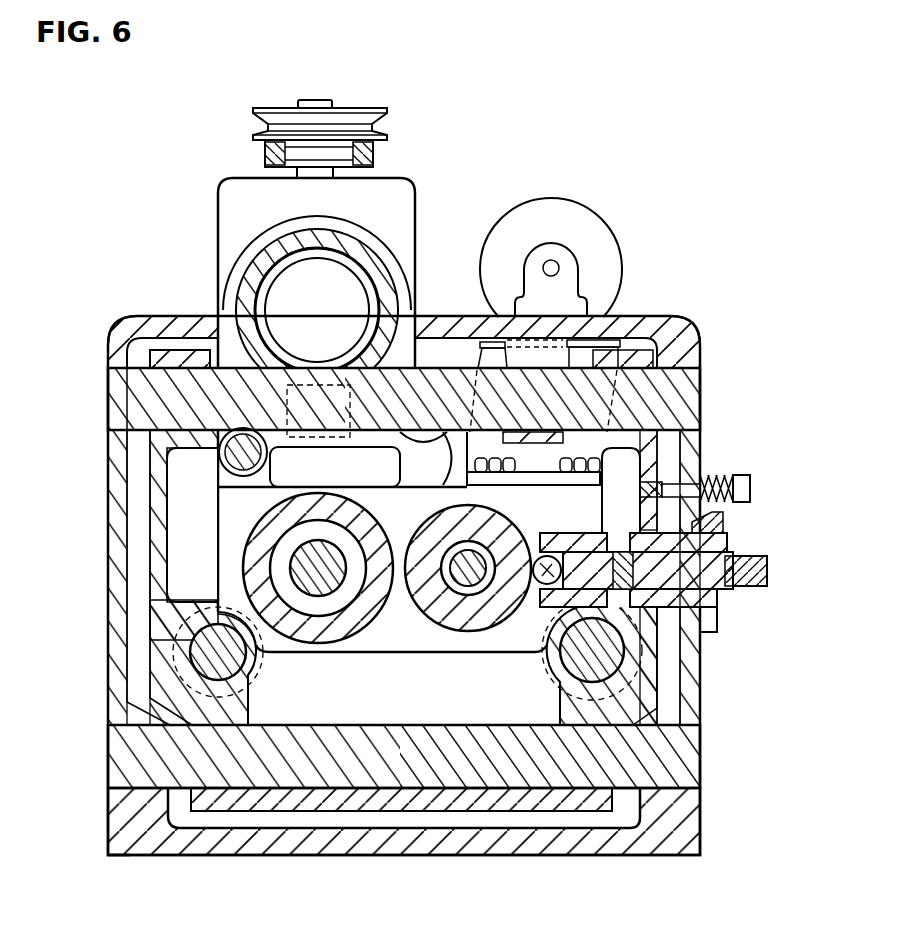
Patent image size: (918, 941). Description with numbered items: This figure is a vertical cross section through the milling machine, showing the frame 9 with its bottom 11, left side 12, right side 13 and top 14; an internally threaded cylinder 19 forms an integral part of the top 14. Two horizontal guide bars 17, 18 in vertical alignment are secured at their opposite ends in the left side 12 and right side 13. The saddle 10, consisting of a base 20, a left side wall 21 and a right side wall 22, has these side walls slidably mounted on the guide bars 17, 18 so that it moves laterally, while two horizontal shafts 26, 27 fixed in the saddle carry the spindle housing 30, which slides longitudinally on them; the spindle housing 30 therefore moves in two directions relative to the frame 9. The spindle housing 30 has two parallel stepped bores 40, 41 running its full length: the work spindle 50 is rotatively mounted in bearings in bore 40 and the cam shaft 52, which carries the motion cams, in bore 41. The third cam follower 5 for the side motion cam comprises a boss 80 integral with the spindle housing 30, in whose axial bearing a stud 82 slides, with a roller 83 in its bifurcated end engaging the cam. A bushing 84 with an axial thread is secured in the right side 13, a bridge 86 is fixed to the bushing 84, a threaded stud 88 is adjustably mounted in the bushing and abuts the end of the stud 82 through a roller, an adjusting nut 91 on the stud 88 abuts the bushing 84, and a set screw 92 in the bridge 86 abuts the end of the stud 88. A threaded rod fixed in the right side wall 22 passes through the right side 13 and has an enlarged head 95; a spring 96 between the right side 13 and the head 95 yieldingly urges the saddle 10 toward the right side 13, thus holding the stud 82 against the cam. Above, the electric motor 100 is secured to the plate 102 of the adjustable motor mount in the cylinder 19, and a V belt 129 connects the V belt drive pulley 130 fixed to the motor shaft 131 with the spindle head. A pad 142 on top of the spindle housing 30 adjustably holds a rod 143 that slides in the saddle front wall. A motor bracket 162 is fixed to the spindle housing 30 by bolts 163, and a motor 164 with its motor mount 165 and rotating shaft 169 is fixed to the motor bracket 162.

The third cam follower 5 is at (740, 534).
The frame 9 is at (116, 866).
The saddle 10 is at (174, 590).
The bottom 11 is at (198, 848).
The left side 12 is at (108, 530).
The right side 13 is at (700, 480).
The top 14 is at (178, 318).
The guide bar 17 is at (108, 750).
The guide bar 18 is at (108, 398).
The cylinder 19 is at (395, 255).
The base 20 is at (335, 815).
The left side wall 21 is at (172, 477).
The right side wall 22 is at (690, 458).
The horizontal shaft 26 is at (575, 665).
The horizontal shaft 27 is at (250, 678).
The spindle housing 30 is at (455, 658).
The stepped bore 40 is at (355, 612).
The stepped bore 41 is at (475, 595).
The work spindle 50 is at (303, 543).
The cam shaft 52 is at (462, 592).
The boss 80 is at (606, 528).
The stud 82 is at (618, 554).
The roller 83 is at (546, 556).
The bushing 84 is at (712, 628).
The bridge 86 is at (740, 583).
The threaded stud 88 is at (732, 597).
The adjusting nut 91 is at (735, 520).
The set screw 92 is at (760, 566).
The enlarged head 95 is at (745, 478).
The spring 96 is at (705, 478).
The electric motor 100 is at (395, 201).
The plate 102 is at (268, 238).
The V belt 129 is at (376, 152).
The V belt drive pulley 130 is at (385, 110).
The shaft 131 is at (330, 100).
The pad 142 is at (335, 467).
The rod 143 is at (267, 462).
The motor bracket 162 is at (552, 463).
The bolts 163 is at (490, 480).
The motor 164 is at (578, 222).
The motor mount 165 is at (572, 272).
The rotating shaft 169 is at (545, 263).